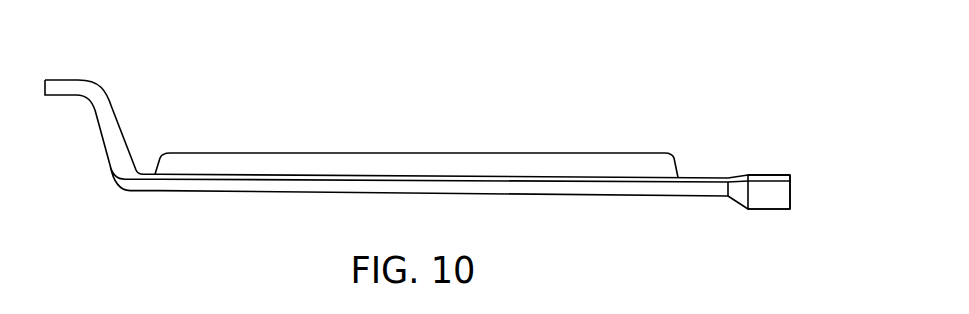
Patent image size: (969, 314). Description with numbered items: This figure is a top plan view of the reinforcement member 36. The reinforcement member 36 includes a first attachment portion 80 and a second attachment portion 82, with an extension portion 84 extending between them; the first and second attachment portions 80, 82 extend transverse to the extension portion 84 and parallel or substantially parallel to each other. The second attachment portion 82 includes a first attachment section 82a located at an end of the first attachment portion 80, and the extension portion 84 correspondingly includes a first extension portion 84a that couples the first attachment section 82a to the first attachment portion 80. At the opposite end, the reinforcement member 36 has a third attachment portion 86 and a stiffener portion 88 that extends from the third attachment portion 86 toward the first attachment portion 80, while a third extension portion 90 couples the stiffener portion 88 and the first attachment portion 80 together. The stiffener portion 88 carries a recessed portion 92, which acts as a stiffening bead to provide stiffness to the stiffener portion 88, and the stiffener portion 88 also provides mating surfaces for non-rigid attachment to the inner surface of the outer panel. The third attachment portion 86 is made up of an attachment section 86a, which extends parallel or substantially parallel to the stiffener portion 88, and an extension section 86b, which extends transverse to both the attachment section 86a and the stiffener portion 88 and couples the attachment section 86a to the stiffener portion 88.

The reinforcement member 36 is at (313, 82).
The first attachment portion 80 is at (761, 214).
The second attachment portion 82 is at (763, 165).
The first attachment section 82a is at (778, 177).
The extension portion 84 is at (799, 191).
The first extension portion 84a is at (773, 196).
The third attachment portion 86 is at (53, 72).
The attachment section 86a is at (66, 79).
The extension section 86b is at (102, 132).
The stiffener portion 88 is at (154, 138).
The third extension portion 90 is at (730, 206).
The recessed portion 92 is at (502, 168).